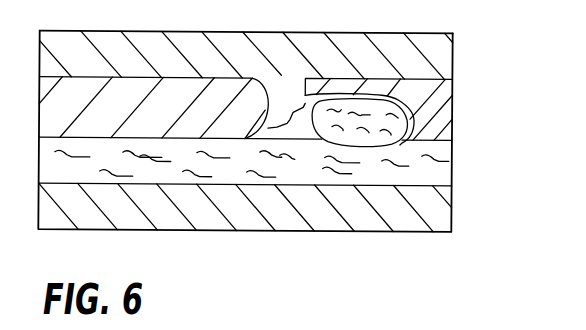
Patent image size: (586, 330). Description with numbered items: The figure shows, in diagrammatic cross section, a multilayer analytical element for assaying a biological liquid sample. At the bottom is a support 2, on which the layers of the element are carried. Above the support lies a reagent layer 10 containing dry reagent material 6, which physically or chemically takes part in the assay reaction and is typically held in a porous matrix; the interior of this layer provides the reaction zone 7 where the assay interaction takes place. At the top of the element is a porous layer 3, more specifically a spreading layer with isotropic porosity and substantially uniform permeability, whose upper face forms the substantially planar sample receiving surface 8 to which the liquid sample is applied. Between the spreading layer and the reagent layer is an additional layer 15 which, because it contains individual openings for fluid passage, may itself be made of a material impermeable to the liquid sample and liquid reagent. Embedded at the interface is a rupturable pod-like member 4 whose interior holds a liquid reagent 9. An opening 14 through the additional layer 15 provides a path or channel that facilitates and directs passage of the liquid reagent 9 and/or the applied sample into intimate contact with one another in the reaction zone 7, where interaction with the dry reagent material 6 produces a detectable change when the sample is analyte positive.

The sample receiving surface 8 is at (352, 32).
The porous layer 3 is at (452, 50).
The additional layer 15 is at (452, 93).
The rupturable pod-like member 4 is at (412, 117).
The liquid reagent 9 is at (363, 128).
The opening 14 is at (291, 122).
The reagent layer 10 is at (452, 167).
The dry reagent material 6 is at (150, 160).
The reaction zone 7 is at (232, 173).
The support 2 is at (452, 208).